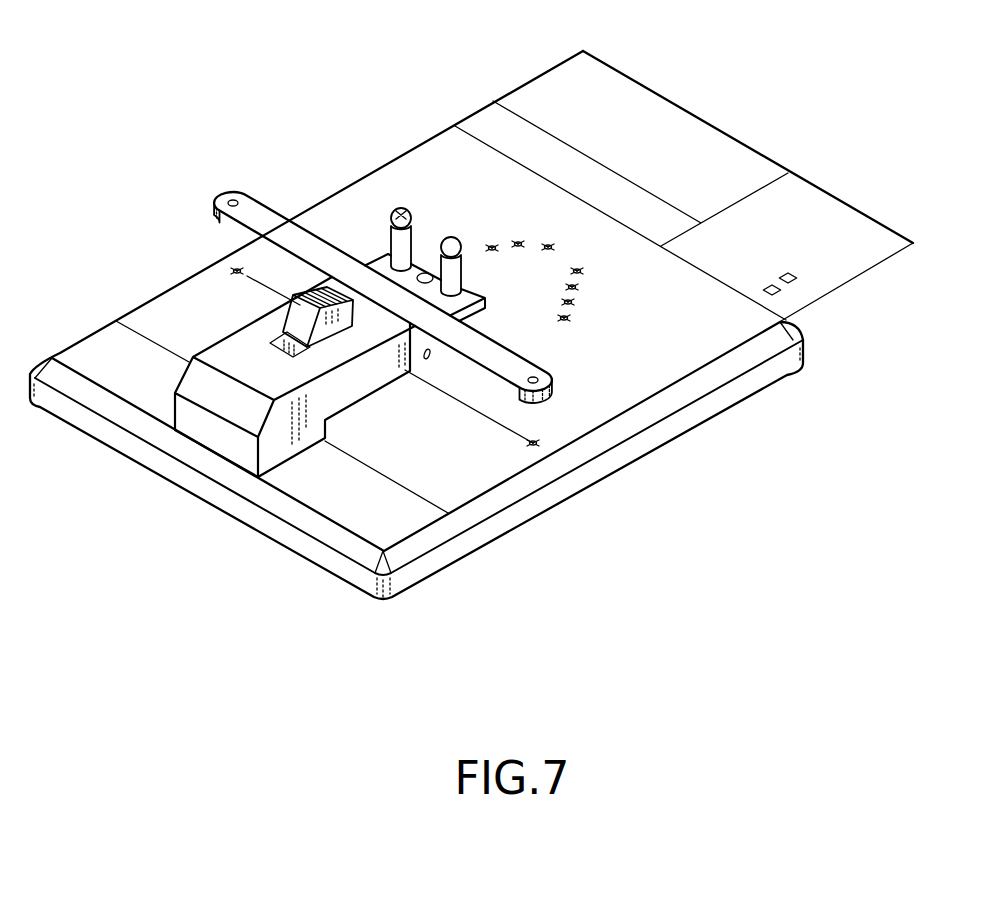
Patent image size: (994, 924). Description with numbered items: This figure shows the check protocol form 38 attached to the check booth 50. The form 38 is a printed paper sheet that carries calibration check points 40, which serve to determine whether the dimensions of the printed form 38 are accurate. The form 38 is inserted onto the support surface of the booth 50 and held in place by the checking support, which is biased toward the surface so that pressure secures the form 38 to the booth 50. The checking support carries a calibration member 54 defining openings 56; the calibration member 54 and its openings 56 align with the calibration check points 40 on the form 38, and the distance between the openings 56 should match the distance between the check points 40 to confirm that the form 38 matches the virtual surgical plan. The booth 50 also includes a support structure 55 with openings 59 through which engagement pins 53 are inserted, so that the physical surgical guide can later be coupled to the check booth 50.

The check protocol form 38 is at (858, 280).
The calibration check points 40 is at (537, 447).
The check booth 50 is at (737, 389).
The engagement pins 53 is at (401, 212).
The calibration member 54 is at (258, 226).
The support structure 55 is at (380, 258).
The openings 56 is at (236, 203).
The openings 59 is at (453, 293).